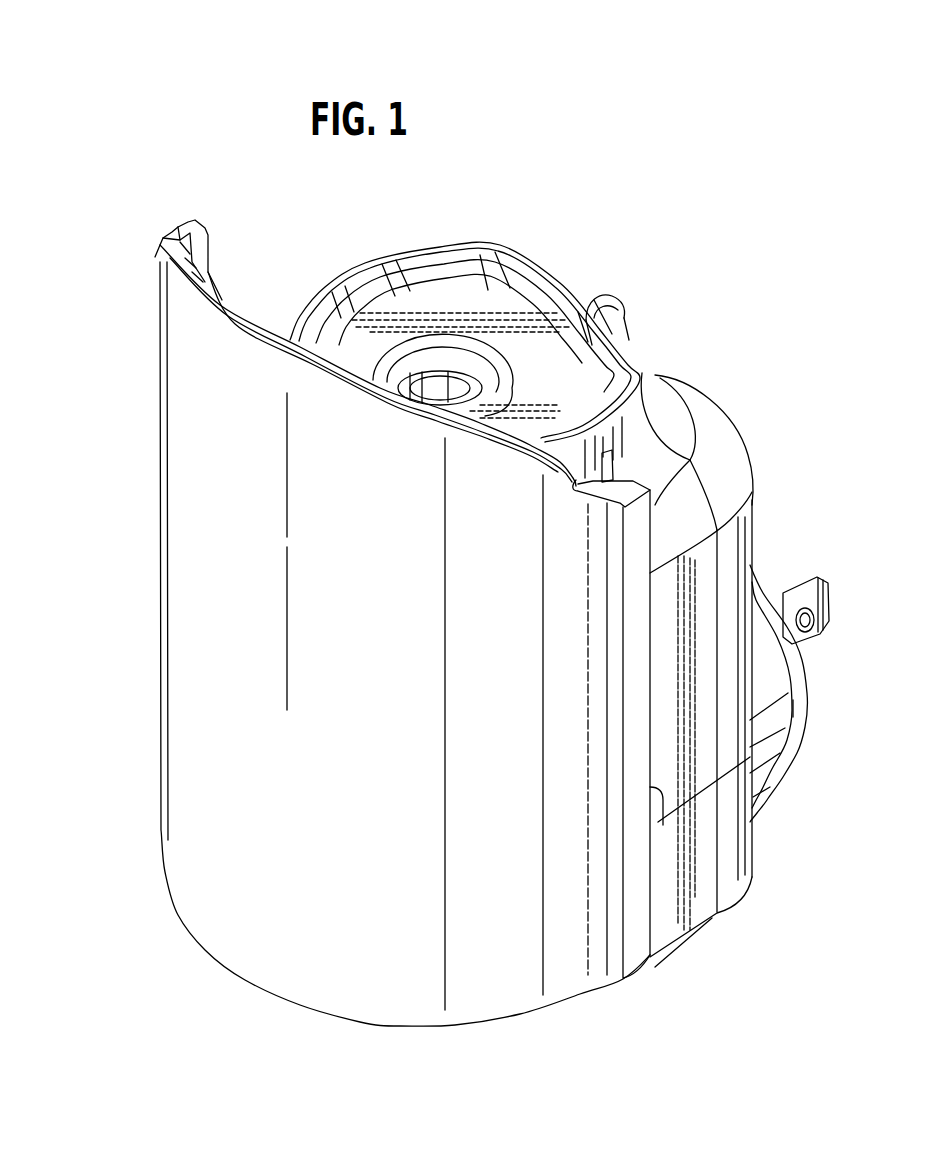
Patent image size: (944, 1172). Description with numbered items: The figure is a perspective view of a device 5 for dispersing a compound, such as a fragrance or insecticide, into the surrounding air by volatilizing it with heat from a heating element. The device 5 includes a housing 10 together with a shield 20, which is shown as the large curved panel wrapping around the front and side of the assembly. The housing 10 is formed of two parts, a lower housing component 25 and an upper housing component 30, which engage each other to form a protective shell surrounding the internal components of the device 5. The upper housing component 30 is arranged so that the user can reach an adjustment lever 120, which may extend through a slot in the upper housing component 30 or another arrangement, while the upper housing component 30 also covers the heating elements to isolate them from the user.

The device 5 is at (176, 116).
The housing 10 is at (752, 412).
The shield 20 is at (157, 389).
The lower housing component 25 is at (752, 839).
The upper housing component 30 is at (752, 459).
The adjustment lever 120 is at (599, 307).